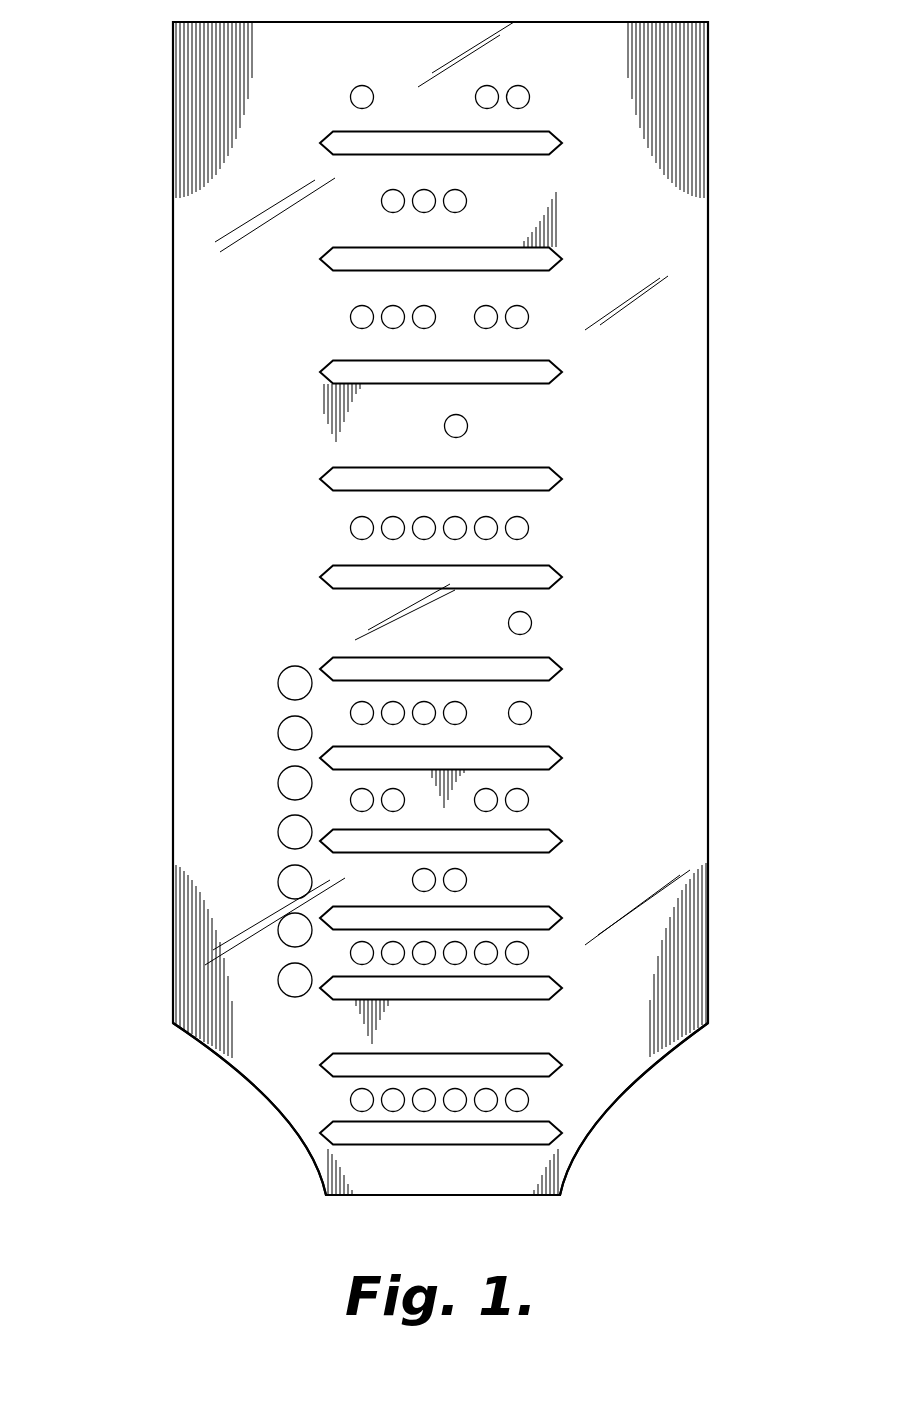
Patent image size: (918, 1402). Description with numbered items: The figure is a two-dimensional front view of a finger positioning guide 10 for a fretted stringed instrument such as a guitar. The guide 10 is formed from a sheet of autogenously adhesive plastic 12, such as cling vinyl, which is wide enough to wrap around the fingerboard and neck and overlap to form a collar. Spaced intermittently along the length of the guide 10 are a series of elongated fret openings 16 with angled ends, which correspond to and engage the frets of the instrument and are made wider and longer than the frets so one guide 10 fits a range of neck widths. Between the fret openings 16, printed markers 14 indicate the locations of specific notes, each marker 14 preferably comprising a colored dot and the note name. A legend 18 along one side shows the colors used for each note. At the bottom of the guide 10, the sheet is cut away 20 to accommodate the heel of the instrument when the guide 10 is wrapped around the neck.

The finger positioning guide 10 is at (110, 49).
The sheet of autogenously adhesive plastic 12 is at (709, 118).
The markers 14 is at (468, 426).
The fret openings 16 is at (320, 143).
The legend 18 is at (262, 829).
The cut away 20 is at (252, 1118).